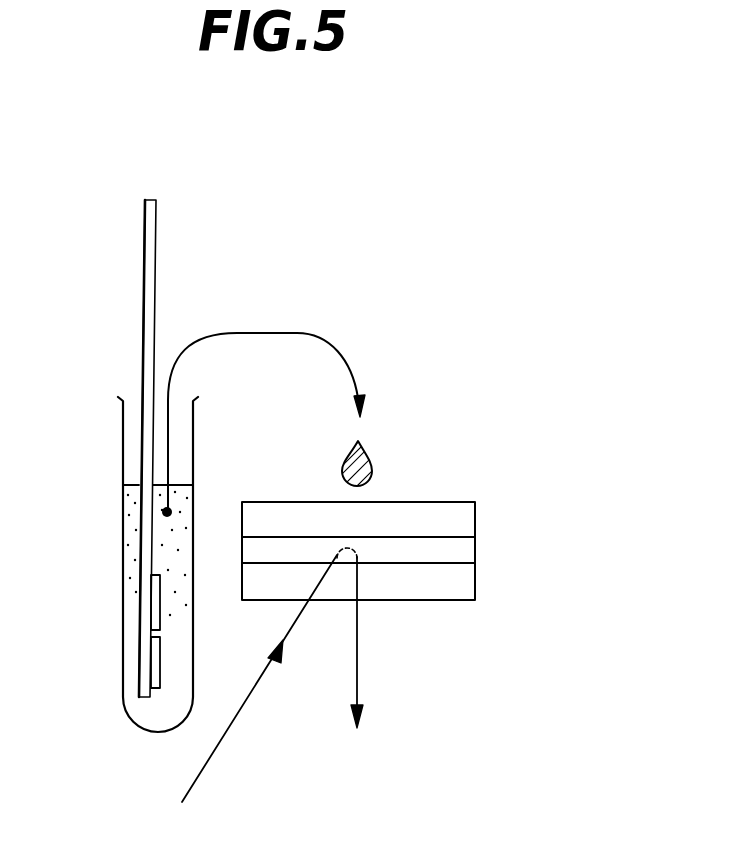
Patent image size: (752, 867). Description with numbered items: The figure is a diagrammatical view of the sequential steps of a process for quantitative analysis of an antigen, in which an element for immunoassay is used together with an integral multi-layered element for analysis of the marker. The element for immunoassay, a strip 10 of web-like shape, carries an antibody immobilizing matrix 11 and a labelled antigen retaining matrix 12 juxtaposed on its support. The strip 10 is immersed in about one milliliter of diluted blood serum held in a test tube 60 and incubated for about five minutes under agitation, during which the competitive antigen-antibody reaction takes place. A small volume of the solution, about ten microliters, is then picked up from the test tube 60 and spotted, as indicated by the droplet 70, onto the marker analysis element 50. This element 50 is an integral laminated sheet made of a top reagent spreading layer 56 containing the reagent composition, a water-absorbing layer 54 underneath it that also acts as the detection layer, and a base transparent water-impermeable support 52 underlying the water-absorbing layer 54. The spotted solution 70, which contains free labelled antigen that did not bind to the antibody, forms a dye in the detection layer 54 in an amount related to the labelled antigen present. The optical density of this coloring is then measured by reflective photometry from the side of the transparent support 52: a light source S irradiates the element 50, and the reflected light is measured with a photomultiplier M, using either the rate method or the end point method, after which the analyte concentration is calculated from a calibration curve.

The element for immunoassay 10 is at (147, 223).
The antibody immobilizing matrix 11 is at (160, 676).
The labelled antigen retaining matrix 12 is at (160, 615).
The marker analysis element 50 is at (442, 549).
The base transparent water-impermeable support 52 is at (399, 587).
The water-absorbing layer 54 is at (452, 553).
The top reagent spreading layer 56 is at (450, 520).
The test tube 60 is at (128, 662).
The solution containing free labelled antigen 70 is at (345, 470).
The light source S is at (249, 701).
The photomultiplier M is at (354, 665).